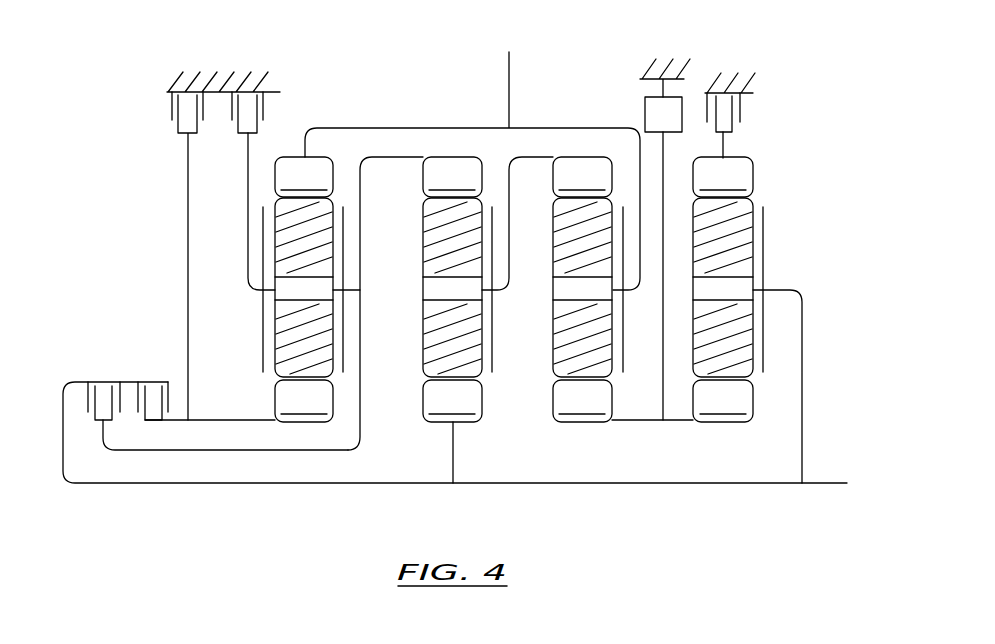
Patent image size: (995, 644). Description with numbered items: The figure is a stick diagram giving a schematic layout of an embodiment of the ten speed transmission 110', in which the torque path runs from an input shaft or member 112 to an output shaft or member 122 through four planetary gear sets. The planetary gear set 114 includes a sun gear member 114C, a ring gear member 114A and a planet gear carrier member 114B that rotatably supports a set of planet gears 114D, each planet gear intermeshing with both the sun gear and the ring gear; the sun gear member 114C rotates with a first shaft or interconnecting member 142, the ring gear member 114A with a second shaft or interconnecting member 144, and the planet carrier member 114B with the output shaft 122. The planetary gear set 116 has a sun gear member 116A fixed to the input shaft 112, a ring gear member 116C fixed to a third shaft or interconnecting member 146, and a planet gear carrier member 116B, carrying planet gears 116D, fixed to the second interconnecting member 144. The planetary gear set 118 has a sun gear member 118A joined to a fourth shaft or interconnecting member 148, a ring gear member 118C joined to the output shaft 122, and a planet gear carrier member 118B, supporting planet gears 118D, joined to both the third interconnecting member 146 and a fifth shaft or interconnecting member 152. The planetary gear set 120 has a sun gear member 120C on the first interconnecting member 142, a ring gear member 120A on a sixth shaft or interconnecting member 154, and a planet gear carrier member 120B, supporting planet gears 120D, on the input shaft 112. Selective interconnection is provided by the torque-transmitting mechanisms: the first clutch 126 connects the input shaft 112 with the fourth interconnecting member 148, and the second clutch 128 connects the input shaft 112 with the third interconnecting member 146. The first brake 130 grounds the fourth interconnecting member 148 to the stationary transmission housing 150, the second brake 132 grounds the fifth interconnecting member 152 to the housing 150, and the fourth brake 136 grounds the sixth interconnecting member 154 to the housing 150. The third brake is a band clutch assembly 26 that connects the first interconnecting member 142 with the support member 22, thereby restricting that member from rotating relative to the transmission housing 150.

The ten speed transmission 110' is at (449, 282).
The input shaft 112 is at (113, 485).
The planetary gear set 114 is at (600, 317).
The ring gear member 114A is at (582, 177).
The planet gear carrier member 114B is at (623, 352).
The sun gear member 114C is at (582, 401).
The planet gears 114D is at (582, 287).
The planetary gear set 116 is at (466, 320).
The sun gear member 116A is at (452, 431).
The planet gear carrier member 116B is at (492, 317).
The ring gear member 116C is at (452, 177).
The planet gears 116D is at (452, 287).
The planetary gear set 118 is at (310, 347).
The sun gear member 118A is at (304, 401).
The planet gear carrier member 118B is at (343, 245).
The ring gear member 118C is at (304, 177).
The planet gears 118D is at (304, 287).
The planetary gear set 120 is at (769, 320).
The ring gear member 120A is at (723, 177).
The planet gear carrier member 120B is at (763, 250).
The sun gear member 120C is at (723, 401).
The planet gears 120D is at (723, 287).
The output shaft 122 is at (509, 103).
The first clutch 126 is at (170, 400).
The second clutch 128 is at (85, 396).
The first brake 130 is at (172, 105).
The second brake 132 is at (232, 115).
The fourth brake 136 is at (740, 110).
The first shaft or interconnecting member 142 is at (624, 424).
The second shaft or interconnecting member 144 is at (510, 233).
The third shaft or interconnecting member 146 is at (362, 333).
The fourth shaft or interconnecting member 148 is at (220, 420).
The transmission housing 150 is at (212, 79).
The fifth shaft or interconnecting member 152 is at (248, 193).
The sixth shaft or interconnecting member 154 is at (723, 148).
The support member 22 is at (682, 70).
The band clutch assembly 26 is at (645, 108).